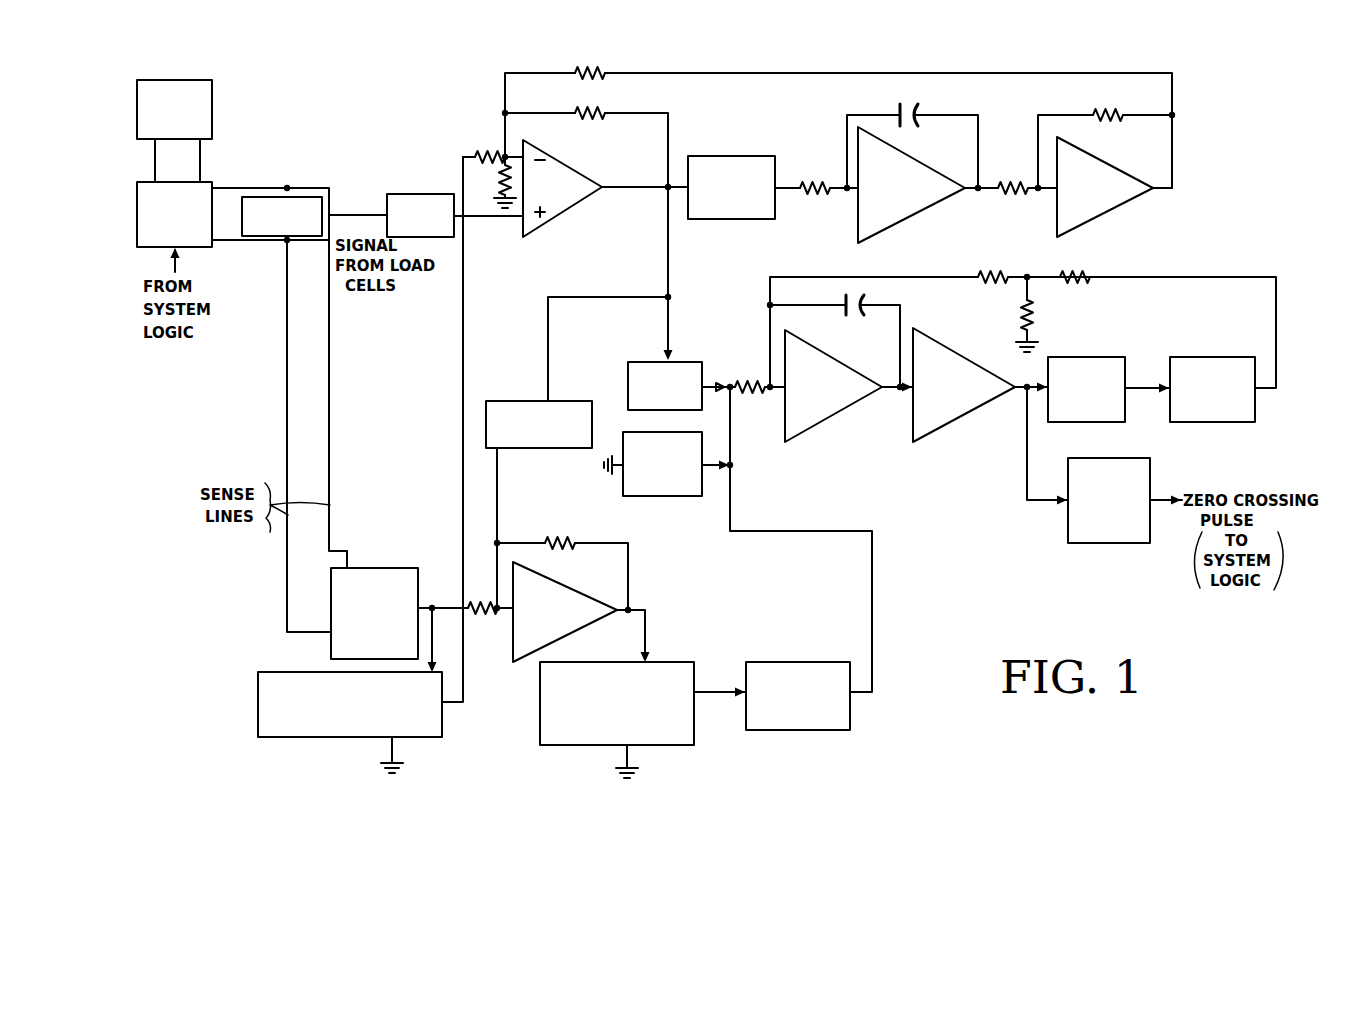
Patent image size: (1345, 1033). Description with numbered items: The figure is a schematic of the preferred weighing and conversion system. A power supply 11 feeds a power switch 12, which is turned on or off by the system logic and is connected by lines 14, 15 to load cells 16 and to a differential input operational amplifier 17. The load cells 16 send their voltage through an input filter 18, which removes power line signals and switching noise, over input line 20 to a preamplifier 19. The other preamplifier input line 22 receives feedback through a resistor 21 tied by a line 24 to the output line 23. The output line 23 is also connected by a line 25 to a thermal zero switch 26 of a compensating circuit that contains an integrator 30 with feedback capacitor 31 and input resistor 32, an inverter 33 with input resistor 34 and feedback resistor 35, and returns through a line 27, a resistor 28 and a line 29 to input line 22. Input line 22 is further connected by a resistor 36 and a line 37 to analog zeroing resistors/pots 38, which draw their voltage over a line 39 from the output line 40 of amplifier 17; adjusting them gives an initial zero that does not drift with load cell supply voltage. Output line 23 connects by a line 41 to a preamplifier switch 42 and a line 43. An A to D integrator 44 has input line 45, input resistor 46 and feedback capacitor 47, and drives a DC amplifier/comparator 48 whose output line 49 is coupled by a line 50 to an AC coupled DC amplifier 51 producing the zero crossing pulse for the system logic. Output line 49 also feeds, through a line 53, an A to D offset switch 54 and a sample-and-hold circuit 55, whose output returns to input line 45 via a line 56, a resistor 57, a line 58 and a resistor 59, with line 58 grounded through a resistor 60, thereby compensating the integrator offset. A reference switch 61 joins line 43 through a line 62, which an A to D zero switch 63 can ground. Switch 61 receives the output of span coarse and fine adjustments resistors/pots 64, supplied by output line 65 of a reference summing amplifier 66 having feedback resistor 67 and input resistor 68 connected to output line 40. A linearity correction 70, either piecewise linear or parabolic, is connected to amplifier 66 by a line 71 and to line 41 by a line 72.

The power supply 11 is at (176, 79).
The power switch 12 is at (203, 181).
The line 14 is at (235, 188).
The line 15 is at (247, 242).
The load cells 16 is at (303, 188).
The differential input operational amplifier 17 is at (396, 552).
The input filter 18 is at (423, 193).
The preamplifier 19 is at (560, 172).
The input line 20 is at (486, 219).
The resistor 21 is at (598, 113).
The input line 22 is at (515, 156).
The output line 23 is at (632, 186).
The line 24 is at (642, 113).
The line 25 is at (683, 185).
The thermal zero switch 26 is at (735, 156).
The line 27 is at (752, 73).
The resistor 28 is at (590, 67).
The line 29 is at (530, 73).
The integrator 30 is at (908, 165).
The feedback capacitor 31 is at (905, 108).
The input resistor 32 is at (812, 185).
The inverter 33 is at (1106, 165).
The input resistor 34 is at (1003, 185).
The resistor 35 is at (1108, 108).
The resistor 36 is at (485, 150).
The line 37 is at (465, 333).
The analog zeroing resistors/pots 38 is at (445, 725).
The line 39 is at (446, 634).
The output line 40 is at (424, 605).
The line 41 is at (669, 272).
The preamplifier switch 42 is at (680, 362).
The line 43 is at (714, 384).
The A to D integrator 44 is at (852, 415).
The input line 45 is at (777, 392).
The input resistor 46 is at (752, 380).
The capacitor 47 is at (853, 303).
The DC amplifier/comparator 48 is at (935, 355).
The output line 49 is at (1017, 378).
The line 50 is at (1027, 467).
The AC coupled DC amplifier 51 is at (1100, 543).
The line 53 is at (1033, 400).
The A to D offset switch 54 is at (1095, 357).
The sample-and-hold circuit 55 is at (1210, 357).
The line 56 is at (836, 277).
The resistor 57 is at (1088, 277).
The line 58 is at (1030, 277).
The resistor 59 is at (992, 275).
The resistor 60 is at (1034, 312).
The reference switch 61 is at (792, 662).
The line 62 is at (800, 531).
The A to D zero switch 63 is at (670, 497).
The span coarse and fine adjustments resistors/pots 64 is at (668, 662).
The output line 65 is at (650, 625).
The reference summing amplifier 66 is at (570, 594).
The resistor 67 is at (558, 540).
The input resistor 68 is at (474, 604).
The linearity correction 70 is at (560, 401).
The line 71 is at (498, 488).
The line 72 is at (575, 297).